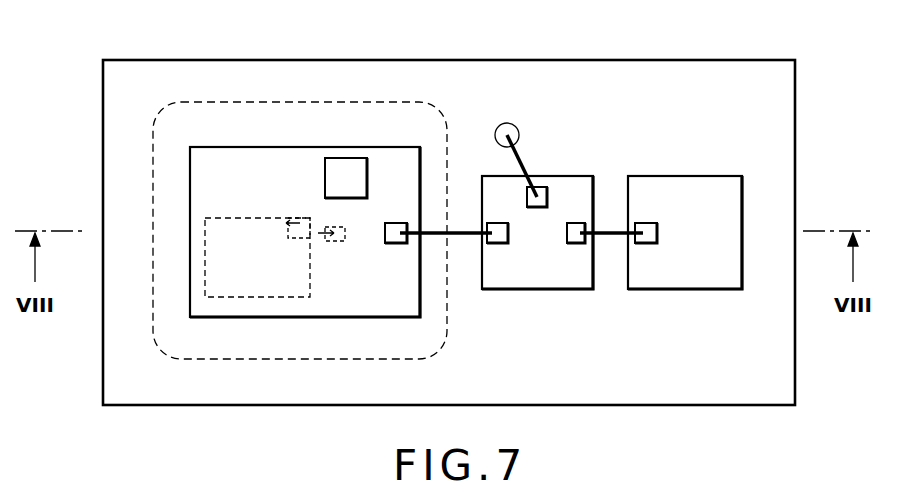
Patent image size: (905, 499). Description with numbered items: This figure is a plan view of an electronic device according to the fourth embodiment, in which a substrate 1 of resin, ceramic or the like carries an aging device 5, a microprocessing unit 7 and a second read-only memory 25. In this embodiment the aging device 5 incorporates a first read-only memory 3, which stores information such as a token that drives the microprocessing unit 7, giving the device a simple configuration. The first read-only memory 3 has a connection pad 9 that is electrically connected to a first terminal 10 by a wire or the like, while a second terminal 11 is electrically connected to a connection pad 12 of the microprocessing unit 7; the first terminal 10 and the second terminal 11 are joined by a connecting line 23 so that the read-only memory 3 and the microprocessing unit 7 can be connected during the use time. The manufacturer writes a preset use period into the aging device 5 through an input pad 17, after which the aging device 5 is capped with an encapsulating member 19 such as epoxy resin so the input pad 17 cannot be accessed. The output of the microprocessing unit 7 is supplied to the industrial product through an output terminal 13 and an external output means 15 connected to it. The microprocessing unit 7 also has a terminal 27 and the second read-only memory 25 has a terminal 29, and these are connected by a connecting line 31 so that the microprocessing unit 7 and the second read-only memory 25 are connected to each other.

The substrate 1 is at (780, 382).
The first read-only memory (ROM) 3 is at (232, 280).
The aging device (SSAD) 5 is at (358, 305).
The microprocessing unit (MPU) 7 is at (567, 275).
The connection pad 9 is at (292, 216).
The first terminal 10 is at (337, 243).
The second terminal 11 is at (393, 243).
The connection pad 12 is at (503, 243).
The output terminal 13 is at (537, 207).
The external output means 15 is at (515, 122).
The input pad 17 is at (340, 173).
The encapsulating member 19 is at (388, 101).
The wiring 23 is at (466, 237).
The second read-only memory (ROM) 25 is at (690, 275).
The terminal 27 is at (573, 223).
The terminal 29 is at (652, 223).
The wiring 31 is at (613, 231).